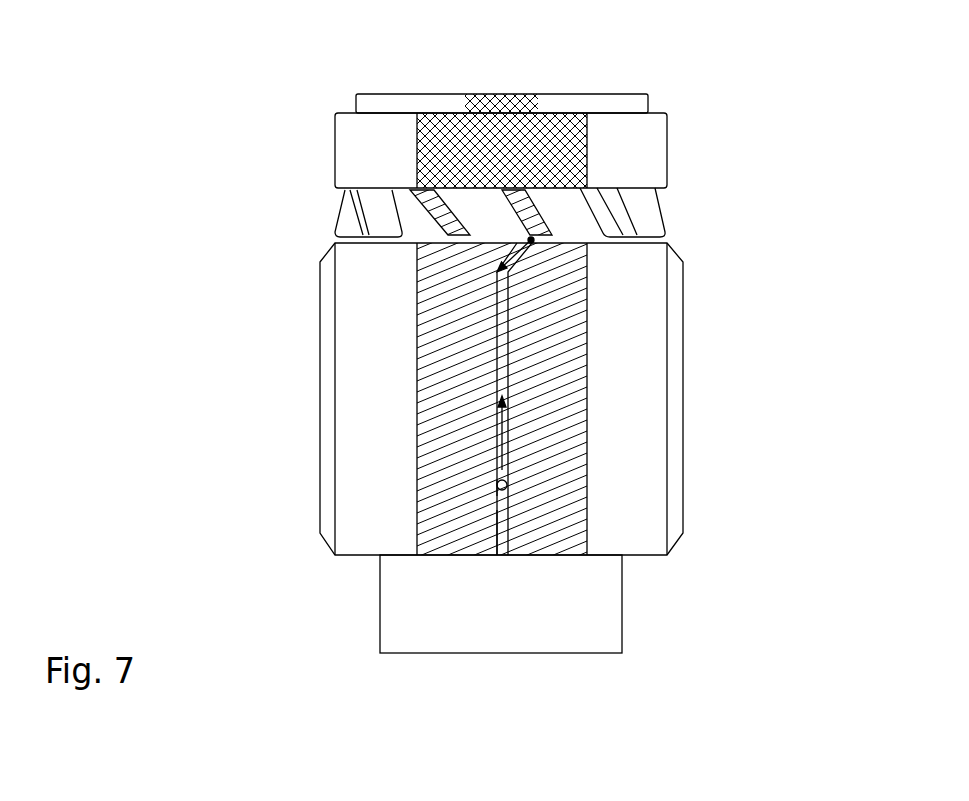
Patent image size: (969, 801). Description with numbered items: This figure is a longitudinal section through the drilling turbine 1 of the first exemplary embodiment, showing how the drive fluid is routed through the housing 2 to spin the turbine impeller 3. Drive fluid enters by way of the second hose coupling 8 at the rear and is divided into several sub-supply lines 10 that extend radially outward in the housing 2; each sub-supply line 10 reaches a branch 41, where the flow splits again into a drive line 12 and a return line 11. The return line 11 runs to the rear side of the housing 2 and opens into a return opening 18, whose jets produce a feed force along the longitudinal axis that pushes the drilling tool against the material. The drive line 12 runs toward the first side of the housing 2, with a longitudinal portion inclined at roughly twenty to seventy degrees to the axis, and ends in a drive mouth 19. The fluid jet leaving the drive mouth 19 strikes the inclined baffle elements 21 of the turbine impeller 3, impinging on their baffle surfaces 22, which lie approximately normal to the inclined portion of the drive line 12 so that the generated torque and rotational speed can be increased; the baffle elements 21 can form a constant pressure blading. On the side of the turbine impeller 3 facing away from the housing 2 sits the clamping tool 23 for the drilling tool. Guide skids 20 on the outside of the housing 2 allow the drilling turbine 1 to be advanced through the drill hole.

The drilling turbine 1 is at (720, 119).
The housing 2 is at (345, 433).
The turbine impeller 3 is at (355, 158).
The second hose coupling 8 is at (612, 610).
The sub-supply line 10 is at (497, 485).
The return line 11 is at (497, 522).
The drive line 12 is at (497, 357).
The return opening 18 is at (510, 375).
The drive mouth 19 is at (531, 240).
The guide skid 20 is at (683, 448).
The baffle element 21 is at (533, 213).
The baffle surface 22 is at (533, 225).
The clamping tool 23 is at (357, 107).
The branch 41 is at (497, 488).